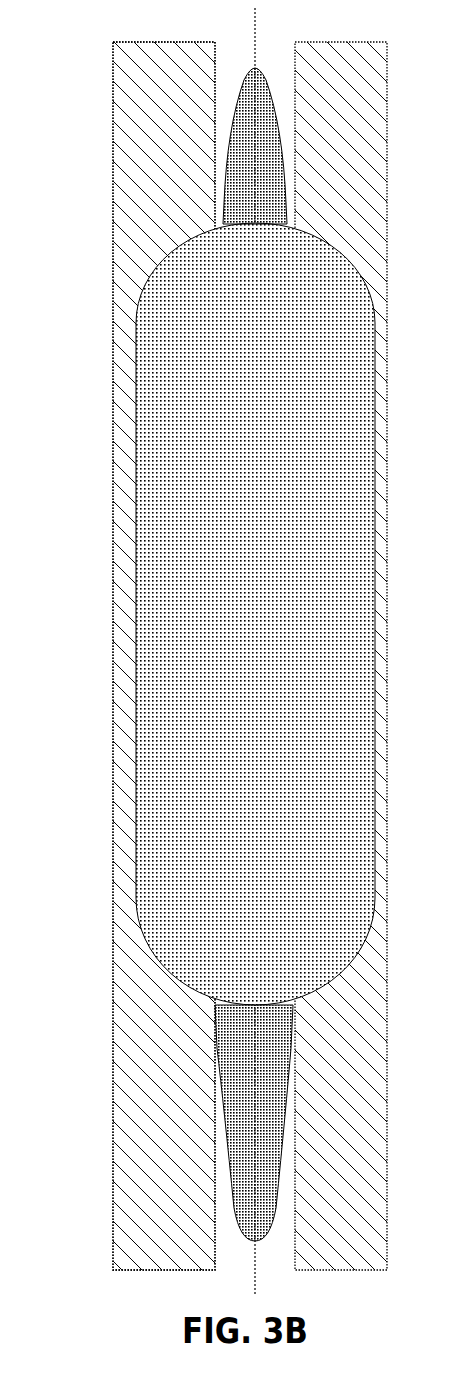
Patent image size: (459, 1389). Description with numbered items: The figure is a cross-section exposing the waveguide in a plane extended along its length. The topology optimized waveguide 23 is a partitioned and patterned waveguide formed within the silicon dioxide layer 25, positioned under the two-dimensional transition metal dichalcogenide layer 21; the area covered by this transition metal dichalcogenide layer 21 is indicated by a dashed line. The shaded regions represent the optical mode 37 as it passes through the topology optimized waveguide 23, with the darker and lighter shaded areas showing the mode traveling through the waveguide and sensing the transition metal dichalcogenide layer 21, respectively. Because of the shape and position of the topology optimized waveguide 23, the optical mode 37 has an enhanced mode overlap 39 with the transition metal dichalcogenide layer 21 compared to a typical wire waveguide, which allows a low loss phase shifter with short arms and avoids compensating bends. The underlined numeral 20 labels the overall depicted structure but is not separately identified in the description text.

The device assembly 20 is at (109, 30).
The 2D TMD 21 is at (105, 327).
The topology optimized waveguide 23 is at (217, 163).
The SiO2 layer 25 is at (105, 66).
The optical mode 37 is at (193, 150).
The enhanced mode overlap 39 is at (172, 222).